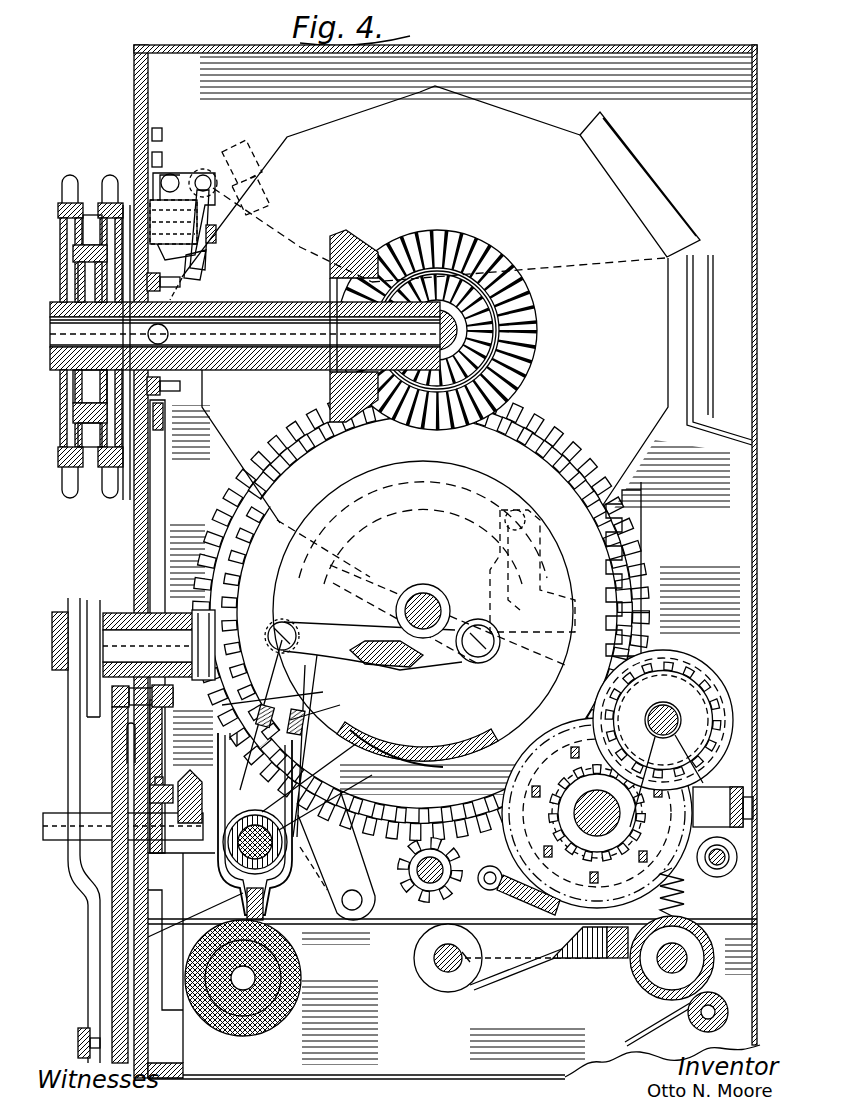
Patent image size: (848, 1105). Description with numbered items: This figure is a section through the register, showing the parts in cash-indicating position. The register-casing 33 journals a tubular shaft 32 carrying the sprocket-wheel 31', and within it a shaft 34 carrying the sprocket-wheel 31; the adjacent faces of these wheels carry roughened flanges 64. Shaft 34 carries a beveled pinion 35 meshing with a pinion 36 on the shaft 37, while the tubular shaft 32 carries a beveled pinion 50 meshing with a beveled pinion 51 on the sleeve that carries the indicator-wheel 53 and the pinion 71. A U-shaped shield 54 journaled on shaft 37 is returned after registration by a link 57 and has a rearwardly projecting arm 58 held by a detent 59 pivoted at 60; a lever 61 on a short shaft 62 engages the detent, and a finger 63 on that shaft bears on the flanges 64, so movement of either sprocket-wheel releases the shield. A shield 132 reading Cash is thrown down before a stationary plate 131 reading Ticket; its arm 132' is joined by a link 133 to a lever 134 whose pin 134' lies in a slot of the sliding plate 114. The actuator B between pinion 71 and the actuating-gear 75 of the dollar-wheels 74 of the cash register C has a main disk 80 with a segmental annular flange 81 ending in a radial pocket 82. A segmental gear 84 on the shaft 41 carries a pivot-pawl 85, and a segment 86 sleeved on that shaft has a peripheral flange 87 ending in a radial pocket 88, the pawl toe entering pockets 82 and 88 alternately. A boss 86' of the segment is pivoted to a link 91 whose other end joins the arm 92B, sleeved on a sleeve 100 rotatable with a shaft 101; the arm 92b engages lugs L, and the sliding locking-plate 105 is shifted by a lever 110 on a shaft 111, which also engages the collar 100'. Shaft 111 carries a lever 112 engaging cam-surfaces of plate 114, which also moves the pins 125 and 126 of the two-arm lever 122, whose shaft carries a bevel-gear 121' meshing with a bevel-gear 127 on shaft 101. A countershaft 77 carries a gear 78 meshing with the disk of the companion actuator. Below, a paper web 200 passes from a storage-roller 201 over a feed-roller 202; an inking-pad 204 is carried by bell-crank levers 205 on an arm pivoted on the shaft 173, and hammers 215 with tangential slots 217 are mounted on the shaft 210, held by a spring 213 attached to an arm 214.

The register-casing 33 is at (138, 93).
The main disk 80 is at (243, 530).
The segment 86 is at (423, 628).
The peripheral flange 87 is at (406, 510).
The pivot-pawl 85 is at (557, 600).
The radial pocket 88 is at (512, 587).
The segmental annular flange 81 is at (527, 510).
The shaft 41 is at (424, 584).
The link 91 is at (363, 648).
The boss 86' is at (494, 646).
The radial pocket 82 is at (637, 616).
The segmental gear 84 is at (588, 560).
The beveled pinion 35 is at (420, 232).
The beveled pinion 51 is at (499, 256).
The pinion 71 is at (543, 323).
The pinion 36 is at (522, 278).
The shaft 37 is at (525, 356).
The shaft 34 is at (50, 345).
The beveled pinion 50 is at (338, 232).
The sprocket-wheel 31 is at (59, 322).
The sprocket-wheel 31' is at (109, 316).
The finger 63 is at (90, 212).
The flanges 64 is at (80, 263).
The pivot 60 is at (214, 117).
The detent 59 is at (187, 177).
The lever 61 is at (205, 176).
The short shaft 62 is at (216, 233).
The rearwardly projecting arm 58 is at (199, 252).
The link 133 is at (248, 135).
The rearwardly-projecting arm 132' is at (439, 221).
The indicator-wheel 53 is at (353, 140).
The U-shaped shield 54 is at (656, 196).
The shield 132 is at (741, 350).
The stationary plate 131 is at (694, 369).
The tubular shaft 32 is at (225, 357).
The lever 134 is at (124, 626).
The bevel-gear 127 is at (203, 817).
The two-arm lever 122 is at (70, 902).
The pin 126 is at (51, 628).
The shaft 111 is at (159, 645).
The lever 112 is at (115, 689).
The pin 134' is at (78, 885).
The bevel-gear 121' is at (110, 796).
The pin 125 is at (78, 1043).
The sliding plate 114 is at (147, 937).
The arm 92B is at (283, 683).
The lever 110 is at (222, 705).
The lugs L is at (310, 718).
The collar 100' is at (385, 743).
The sleeve 100 is at (310, 777).
The shaft 101 is at (340, 800).
The arm 92b is at (236, 788).
The sliding locking-plate 105 is at (272, 924).
The link 57 is at (337, 873).
The dollar-wheels 74 is at (532, 740).
The cash-fare-register mechanism C is at (557, 743).
The actuating-gear 75 is at (688, 873).
The spring 213 is at (690, 928).
The paper web 200 is at (362, 926).
The storage-roller 201 is at (257, 1037).
The countershaft 77 is at (418, 893).
The gear 78 is at (414, 957).
The tangential slot 217 is at (447, 973).
The shaft 210 is at (444, 970).
The bell-crank levers 205 is at (510, 903).
The inking-pad 204 is at (544, 913).
The shaft 173 is at (585, 956).
The hammers 215 is at (612, 958).
The arm 214 is at (558, 962).
The feed-roller 202 is at (667, 992).
The actuator B is at (260, 565).